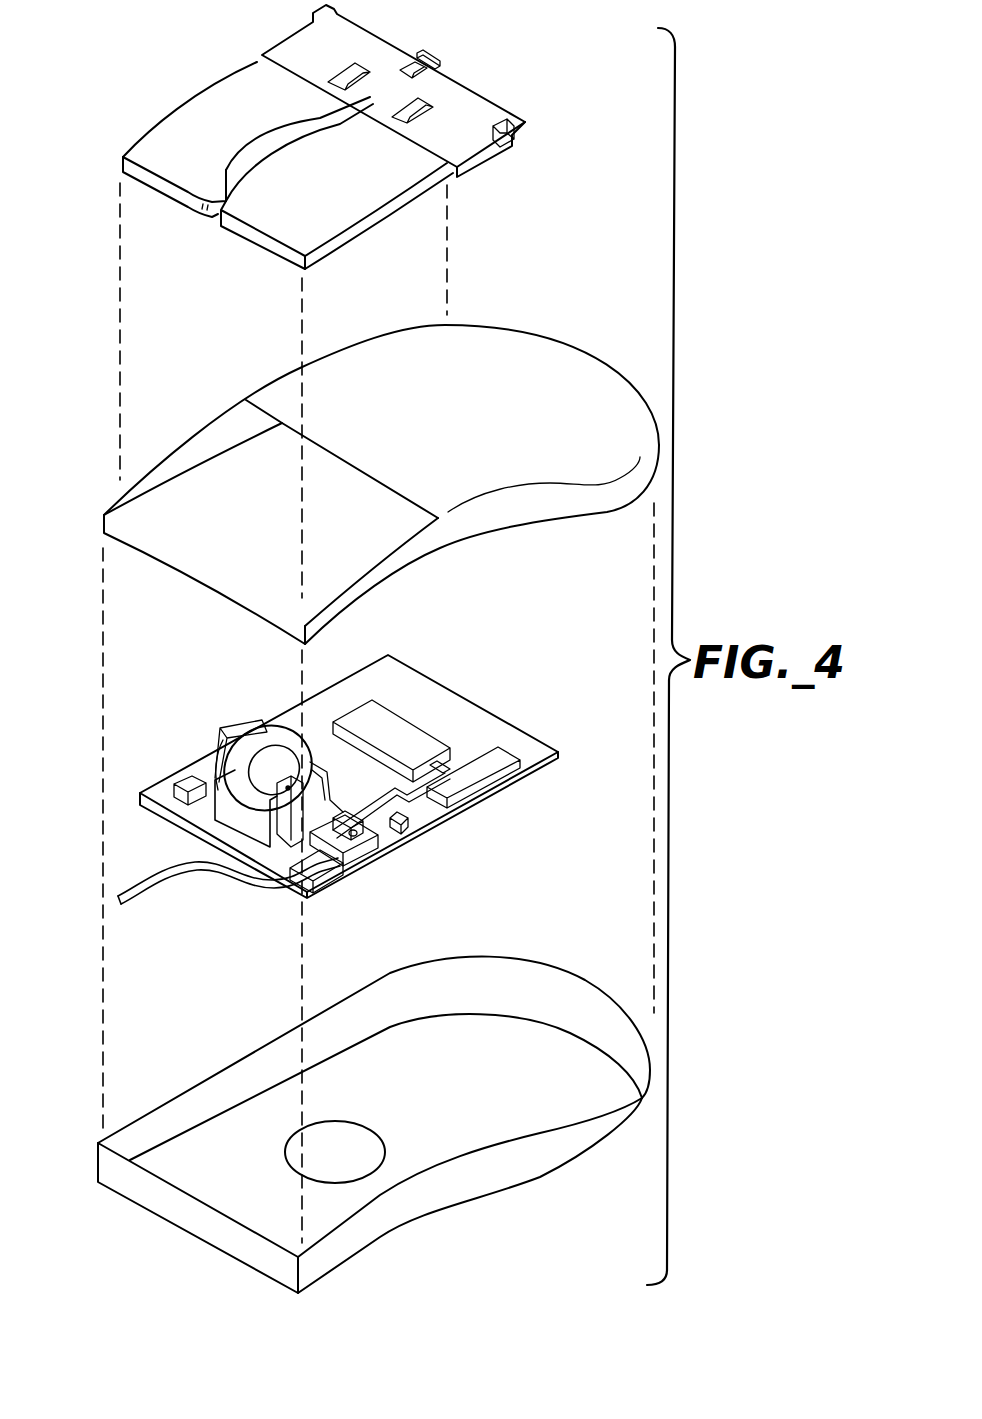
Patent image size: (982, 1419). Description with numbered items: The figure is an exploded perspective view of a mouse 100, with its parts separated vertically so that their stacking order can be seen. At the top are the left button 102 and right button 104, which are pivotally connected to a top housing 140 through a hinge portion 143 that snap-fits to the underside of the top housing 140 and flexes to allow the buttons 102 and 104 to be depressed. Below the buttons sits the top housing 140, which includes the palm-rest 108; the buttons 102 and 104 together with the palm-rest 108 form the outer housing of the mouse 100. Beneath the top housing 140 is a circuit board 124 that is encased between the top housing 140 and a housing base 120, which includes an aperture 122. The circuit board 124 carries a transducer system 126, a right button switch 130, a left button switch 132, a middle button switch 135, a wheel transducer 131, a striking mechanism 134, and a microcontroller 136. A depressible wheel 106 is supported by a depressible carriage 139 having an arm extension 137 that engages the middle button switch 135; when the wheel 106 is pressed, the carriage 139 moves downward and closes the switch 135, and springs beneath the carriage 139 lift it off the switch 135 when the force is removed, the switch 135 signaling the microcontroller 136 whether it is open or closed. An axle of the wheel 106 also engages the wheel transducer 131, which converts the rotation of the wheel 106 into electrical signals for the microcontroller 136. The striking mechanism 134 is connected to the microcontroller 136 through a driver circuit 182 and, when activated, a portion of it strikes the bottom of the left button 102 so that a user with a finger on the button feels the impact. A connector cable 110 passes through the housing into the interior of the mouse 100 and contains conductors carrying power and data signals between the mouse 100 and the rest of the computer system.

The mouse 100 is at (123, 39).
The left button 102 is at (332, 197).
The right button 104 is at (233, 110).
The depressible wheel 106 is at (282, 735).
The palm-rest 108 is at (381, 471).
The connector cable 110 is at (160, 887).
The housing base 120 is at (374, 1125).
The aperture 122 is at (367, 1177).
The circuit board 124 is at (344, 778).
The transducer system 126 is at (392, 735).
The right button switch 130 is at (178, 793).
The wheel transducer 131 is at (227, 743).
The left button switch 132 is at (328, 883).
The striking mechanism 134 is at (357, 848).
The middle button switch 135 is at (353, 822).
The microcontroller 136 is at (482, 783).
The arm extension 137 is at (320, 763).
The depressible carriage 139 is at (233, 830).
The top housing 140 is at (493, 513).
The hinge portion 143 is at (452, 107).
The driver circuit 182 is at (408, 823).